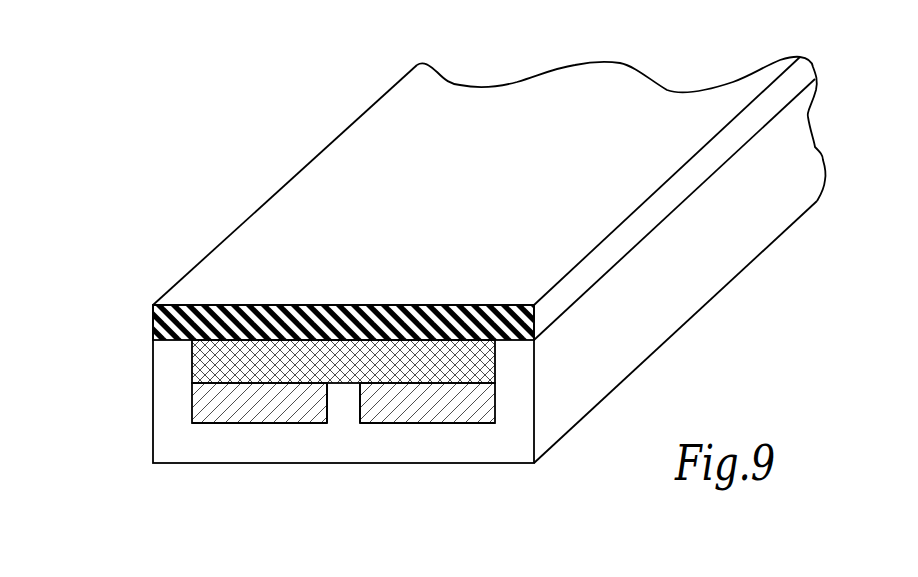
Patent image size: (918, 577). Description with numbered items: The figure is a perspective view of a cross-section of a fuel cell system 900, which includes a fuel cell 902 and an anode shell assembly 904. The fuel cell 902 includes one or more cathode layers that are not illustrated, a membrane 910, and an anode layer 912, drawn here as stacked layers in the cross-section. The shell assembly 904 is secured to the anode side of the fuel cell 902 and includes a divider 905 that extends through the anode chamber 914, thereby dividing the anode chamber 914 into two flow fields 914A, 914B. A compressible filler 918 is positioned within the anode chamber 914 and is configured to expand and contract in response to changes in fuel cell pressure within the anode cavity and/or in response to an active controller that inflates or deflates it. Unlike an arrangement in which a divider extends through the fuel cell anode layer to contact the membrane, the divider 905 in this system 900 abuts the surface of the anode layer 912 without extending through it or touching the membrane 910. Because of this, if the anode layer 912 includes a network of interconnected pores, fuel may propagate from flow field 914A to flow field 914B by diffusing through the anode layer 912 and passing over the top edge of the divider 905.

The fuel cell system 900 is at (138, 90).
The fuel cell 902 is at (268, 202).
The anode shell assembly 904 is at (153, 431).
The divider 905 is at (345, 395).
The membrane 910 is at (153, 322).
The anode layer 912 is at (203, 357).
The anode chamber 914 is at (287, 423).
The flow field 914A is at (197, 392).
The flow field 914B is at (497, 412).
The compressible filler 918 is at (247, 408).